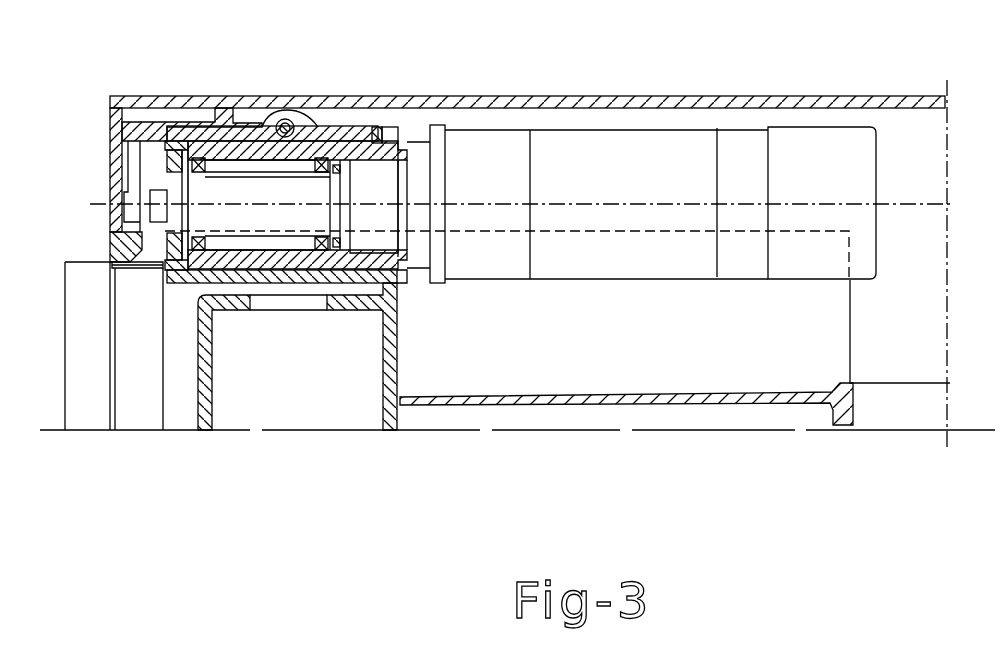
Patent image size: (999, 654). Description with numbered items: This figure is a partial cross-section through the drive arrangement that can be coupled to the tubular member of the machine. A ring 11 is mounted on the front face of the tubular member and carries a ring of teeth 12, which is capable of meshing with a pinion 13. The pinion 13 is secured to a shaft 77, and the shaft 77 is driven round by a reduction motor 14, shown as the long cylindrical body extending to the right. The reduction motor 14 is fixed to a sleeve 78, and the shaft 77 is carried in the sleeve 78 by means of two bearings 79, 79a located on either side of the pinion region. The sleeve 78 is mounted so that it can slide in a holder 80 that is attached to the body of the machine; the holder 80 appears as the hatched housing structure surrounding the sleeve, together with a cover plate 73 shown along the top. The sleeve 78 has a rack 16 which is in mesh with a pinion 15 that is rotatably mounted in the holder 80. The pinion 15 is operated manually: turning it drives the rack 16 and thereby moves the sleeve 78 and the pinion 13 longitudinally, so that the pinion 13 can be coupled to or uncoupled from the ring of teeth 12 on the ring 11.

The ring 11 is at (145, 410).
The ring of teeth 12 is at (123, 265).
The pinion 13 is at (183, 140).
The reduction motor 14 is at (483, 263).
The pinion 15 is at (312, 130).
The rack 16 is at (312, 142).
The cover plate 73 is at (467, 100).
The shaft 77 is at (212, 203).
The sleeve 78 is at (360, 140).
The bearing 79 is at (203, 140).
The bearing 79a is at (322, 167).
The holder 80 is at (245, 130).